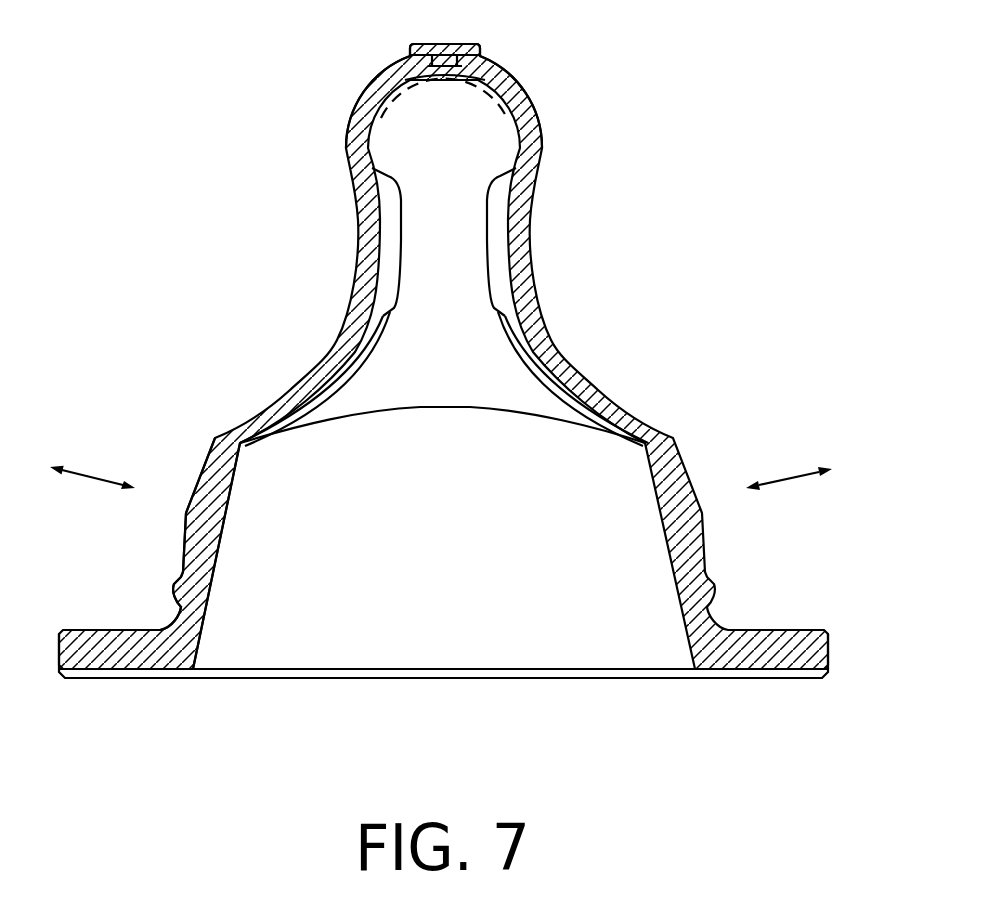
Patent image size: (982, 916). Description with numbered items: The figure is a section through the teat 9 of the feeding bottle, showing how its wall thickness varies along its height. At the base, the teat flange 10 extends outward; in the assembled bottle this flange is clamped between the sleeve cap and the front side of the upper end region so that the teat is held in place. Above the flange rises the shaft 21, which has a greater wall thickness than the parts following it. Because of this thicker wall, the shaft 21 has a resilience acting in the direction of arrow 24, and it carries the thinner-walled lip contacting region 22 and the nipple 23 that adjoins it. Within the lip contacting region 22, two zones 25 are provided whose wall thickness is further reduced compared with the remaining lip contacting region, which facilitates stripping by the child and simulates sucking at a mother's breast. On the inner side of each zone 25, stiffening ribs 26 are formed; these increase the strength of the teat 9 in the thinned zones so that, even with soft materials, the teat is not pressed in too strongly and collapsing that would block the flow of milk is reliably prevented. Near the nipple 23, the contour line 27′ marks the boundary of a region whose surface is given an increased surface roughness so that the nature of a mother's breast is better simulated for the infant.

The teat 9 is at (280, 255).
The teat flange 10 is at (795, 645).
The shaft 21 is at (205, 538).
The lip contacting region 22 is at (528, 283).
The nipple 23 is at (535, 98).
The arrow 24 is at (94, 470).
The zones 25 is at (315, 383).
The stiffening ribs 26 is at (500, 203).
The contour line 27′ is at (382, 112).